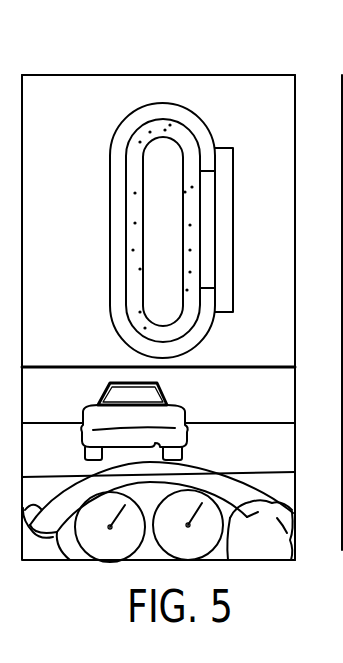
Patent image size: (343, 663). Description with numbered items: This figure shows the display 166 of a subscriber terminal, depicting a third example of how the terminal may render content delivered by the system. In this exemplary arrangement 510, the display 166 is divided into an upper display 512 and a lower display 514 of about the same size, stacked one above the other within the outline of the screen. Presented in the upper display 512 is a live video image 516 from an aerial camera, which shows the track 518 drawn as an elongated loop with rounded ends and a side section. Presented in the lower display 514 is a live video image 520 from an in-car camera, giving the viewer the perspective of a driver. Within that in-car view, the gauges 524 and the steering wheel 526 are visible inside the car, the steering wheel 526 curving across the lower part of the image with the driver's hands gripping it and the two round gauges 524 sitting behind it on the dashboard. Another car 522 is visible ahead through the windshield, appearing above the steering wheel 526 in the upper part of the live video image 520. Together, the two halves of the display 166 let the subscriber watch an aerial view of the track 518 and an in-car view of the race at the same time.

The display 166 is at (108, 73).
The exemplary arrangement 510 is at (190, 73).
The upper display 512 is at (297, 98).
The lower display 514 is at (295, 493).
The live video image 516 is at (80, 117).
The track 518 is at (110, 212).
The live video image 520 is at (65, 397).
The car 522 is at (163, 395).
The gauges 524 is at (100, 545).
The steering wheel 526 is at (223, 472).